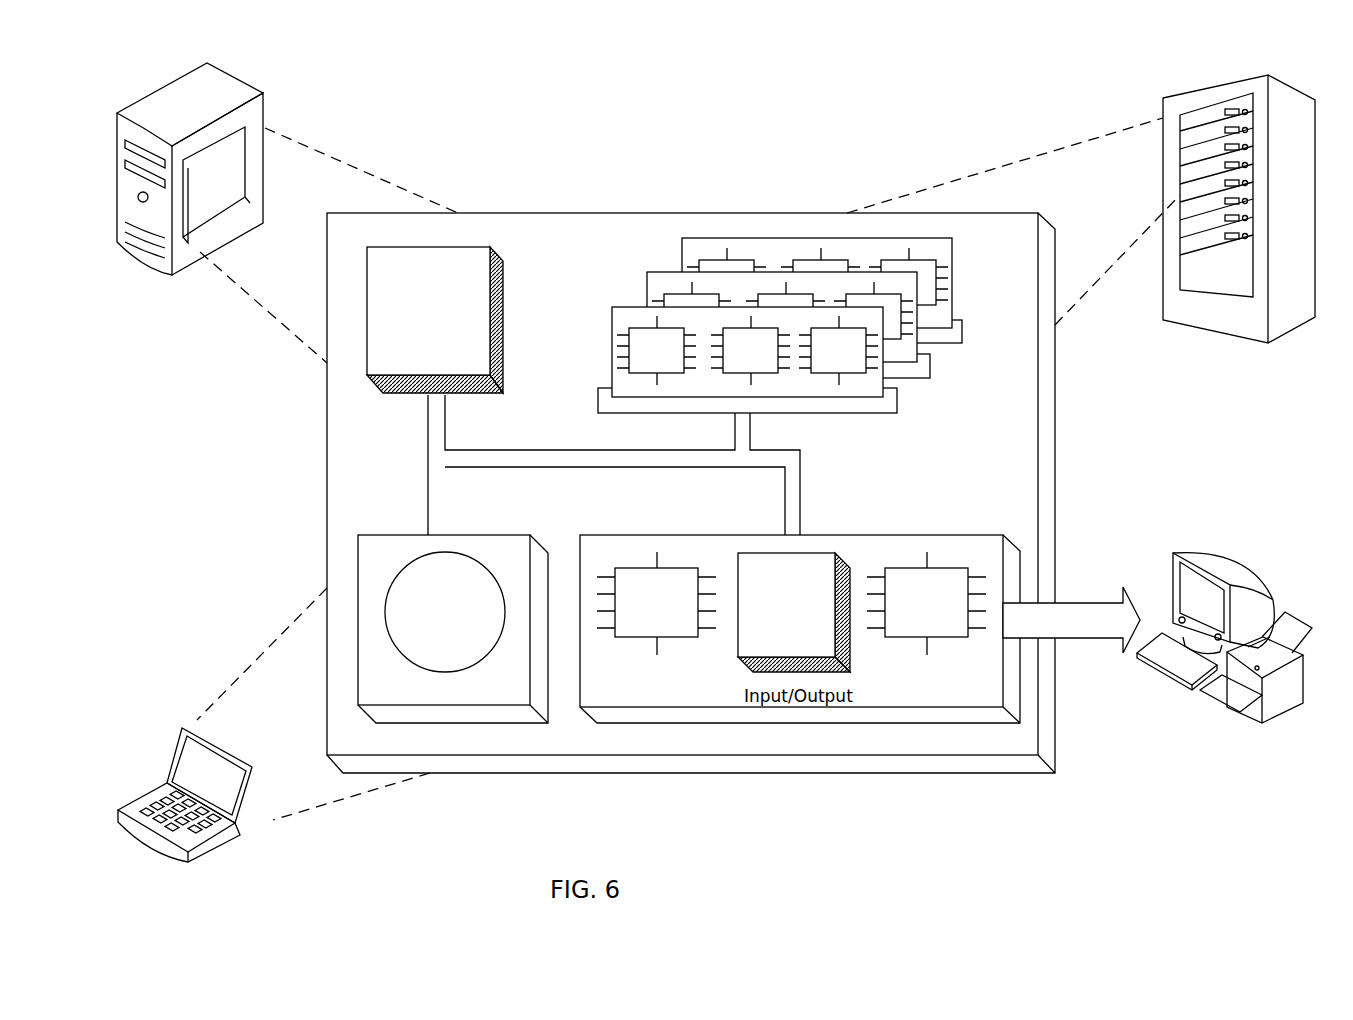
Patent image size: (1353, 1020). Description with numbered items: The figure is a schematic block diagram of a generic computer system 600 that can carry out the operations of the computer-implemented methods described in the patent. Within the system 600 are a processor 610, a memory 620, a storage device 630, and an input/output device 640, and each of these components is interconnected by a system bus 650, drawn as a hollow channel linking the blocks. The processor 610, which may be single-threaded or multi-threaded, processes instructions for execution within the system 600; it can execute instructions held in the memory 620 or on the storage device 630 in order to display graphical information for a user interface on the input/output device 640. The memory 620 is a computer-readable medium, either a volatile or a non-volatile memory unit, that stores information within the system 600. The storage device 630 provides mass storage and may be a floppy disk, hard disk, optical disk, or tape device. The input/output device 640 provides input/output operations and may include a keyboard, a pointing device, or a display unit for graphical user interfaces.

The computer system 600 is at (514, 88).
The processor 610 is at (491, 253).
The memory 620 is at (960, 379).
The storage device 630 is at (409, 534).
The input/output device 640 is at (1172, 559).
The system bus 650 is at (614, 467).